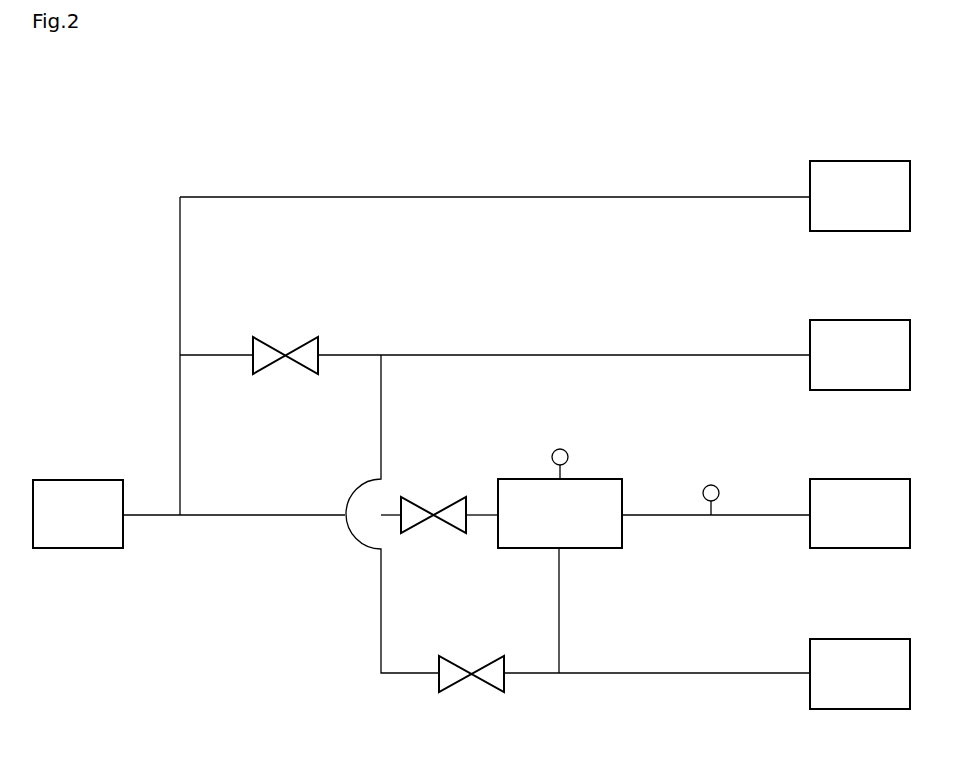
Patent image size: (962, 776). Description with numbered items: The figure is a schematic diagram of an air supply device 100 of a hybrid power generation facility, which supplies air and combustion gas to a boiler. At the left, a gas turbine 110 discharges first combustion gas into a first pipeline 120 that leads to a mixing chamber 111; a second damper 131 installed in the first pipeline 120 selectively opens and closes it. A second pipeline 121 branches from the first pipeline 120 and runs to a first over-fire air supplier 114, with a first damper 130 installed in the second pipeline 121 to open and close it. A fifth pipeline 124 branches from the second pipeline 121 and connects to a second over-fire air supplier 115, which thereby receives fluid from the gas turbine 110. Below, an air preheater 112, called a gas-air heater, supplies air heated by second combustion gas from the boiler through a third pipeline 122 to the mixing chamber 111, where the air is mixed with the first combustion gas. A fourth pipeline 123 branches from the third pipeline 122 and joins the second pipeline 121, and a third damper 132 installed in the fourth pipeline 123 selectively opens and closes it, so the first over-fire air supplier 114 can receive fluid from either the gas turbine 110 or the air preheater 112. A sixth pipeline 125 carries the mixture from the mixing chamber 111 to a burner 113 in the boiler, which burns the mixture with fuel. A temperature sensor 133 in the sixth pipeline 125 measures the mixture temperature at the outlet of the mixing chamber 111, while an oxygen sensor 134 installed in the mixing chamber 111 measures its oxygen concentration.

The air supply device 100 is at (36, 116).
The gas turbine 110 is at (78, 548).
The mixing chamber 111 is at (594, 548).
The air preheater 112 is at (858, 639).
The burner 113 is at (858, 479).
The first over-fire air supplier 114 is at (858, 320).
The second over-fire air supplier 115 is at (858, 161).
The first pipeline 120 is at (262, 515).
The second pipeline 121 is at (562, 354).
The third pipeline 122 is at (560, 645).
The fourth pipeline 123 is at (381, 627).
The fifth pipeline 124 is at (494, 196).
The sixth pipeline 125 is at (770, 515).
The first damper 130 is at (268, 337).
The second damper 131 is at (449, 496).
The third damper 132 is at (486, 690).
The temperature sensor 133 is at (712, 485).
The oxygen sensor 134 is at (560, 449).